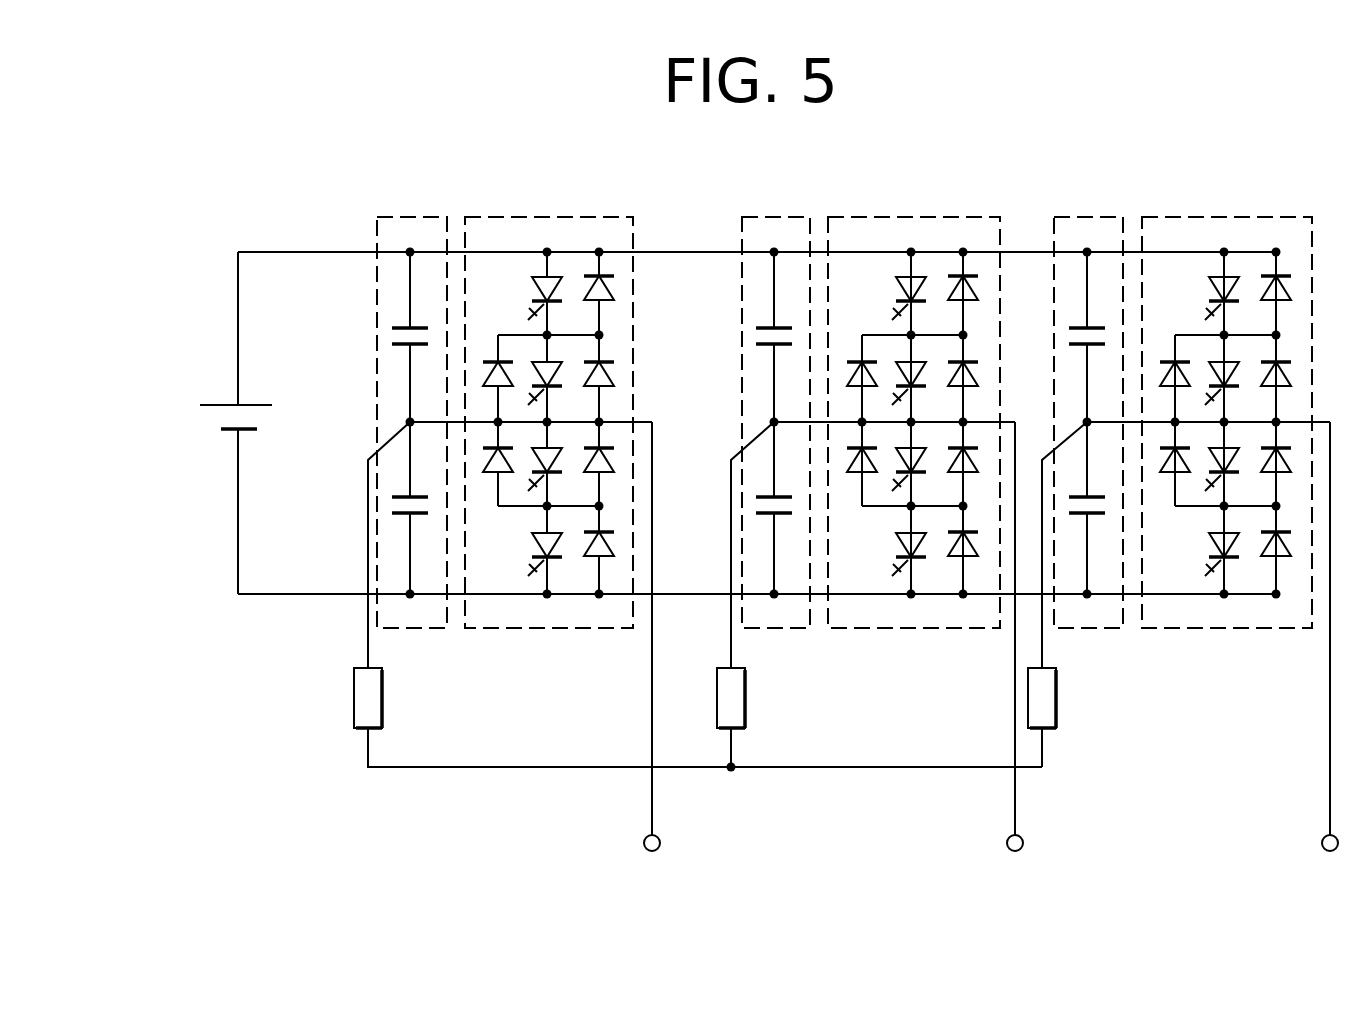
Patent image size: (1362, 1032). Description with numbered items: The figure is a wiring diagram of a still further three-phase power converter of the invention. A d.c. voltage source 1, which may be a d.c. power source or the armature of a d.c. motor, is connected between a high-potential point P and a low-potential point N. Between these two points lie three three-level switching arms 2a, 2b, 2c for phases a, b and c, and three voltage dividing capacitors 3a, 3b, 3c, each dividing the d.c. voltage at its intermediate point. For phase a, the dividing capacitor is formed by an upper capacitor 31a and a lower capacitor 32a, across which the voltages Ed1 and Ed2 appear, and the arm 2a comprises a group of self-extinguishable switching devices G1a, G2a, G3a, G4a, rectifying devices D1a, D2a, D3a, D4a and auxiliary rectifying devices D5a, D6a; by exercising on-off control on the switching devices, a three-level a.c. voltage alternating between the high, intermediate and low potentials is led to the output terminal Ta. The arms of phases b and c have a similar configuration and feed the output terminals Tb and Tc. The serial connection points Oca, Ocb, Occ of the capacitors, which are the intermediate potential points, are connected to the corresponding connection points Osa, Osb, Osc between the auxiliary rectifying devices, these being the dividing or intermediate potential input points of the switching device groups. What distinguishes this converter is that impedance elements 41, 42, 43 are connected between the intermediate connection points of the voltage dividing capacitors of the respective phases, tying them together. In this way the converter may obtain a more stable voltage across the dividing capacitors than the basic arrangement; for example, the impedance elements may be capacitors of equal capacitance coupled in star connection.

The d.c. voltage source 1 is at (215, 403).
The high-potential point P is at (748, 236).
The low-potential point N is at (747, 609).
The 3-level switching arm of phase a 2a is at (547, 217).
The 3-level switching arm of phase b 2b is at (912, 217).
The 3-level switching arm of phase c 2c is at (1225, 217).
The voltage dividing capacitor of phase a 3a is at (409, 217).
The voltage dividing capacitor of phase b 3b is at (778, 217).
The voltage dividing capacitor of phase c 3c is at (1091, 217).
The upper capacitor of phase a 31a is at (392, 332).
The lower capacitor of phase a 32a is at (393, 512).
The switching device G1a is at (516, 294).
The switching device G2a is at (560, 357).
The switching device G3a is at (565, 476).
The switching device G4a is at (516, 552).
The rectifying device D1a is at (614, 288).
The rectifying device D2a is at (614, 378).
The rectifying device D3a is at (614, 458).
The rectifying device D4a is at (614, 547).
The auxiliary rectifying device D5a is at (483, 378).
The auxiliary rectifying device D6a is at (483, 462).
The serial connection point of the phase-a capacitors Oca is at (381, 425).
The connection point between auxiliary rectifying devices D5a and D6a Osa is at (531, 410).
The serial connection point of the phase-b capacitors Ocb is at (746, 420).
The connection point between auxiliary rectifying devices of phase b Osb is at (894, 407).
The serial connection point of the phase-c capacitors Occ is at (1062, 411).
The connection point between auxiliary rectifying devices of phase c Osc is at (1208, 407).
The impedance element 41 is at (353, 705).
The impedance element 42 is at (746, 702).
The impedance element 43 is at (1058, 702).
The output terminal of phase a Ta is at (652, 654).
The output terminal of phase b Tb is at (1016, 654).
The output terminal of phase c Tc is at (1328, 654).